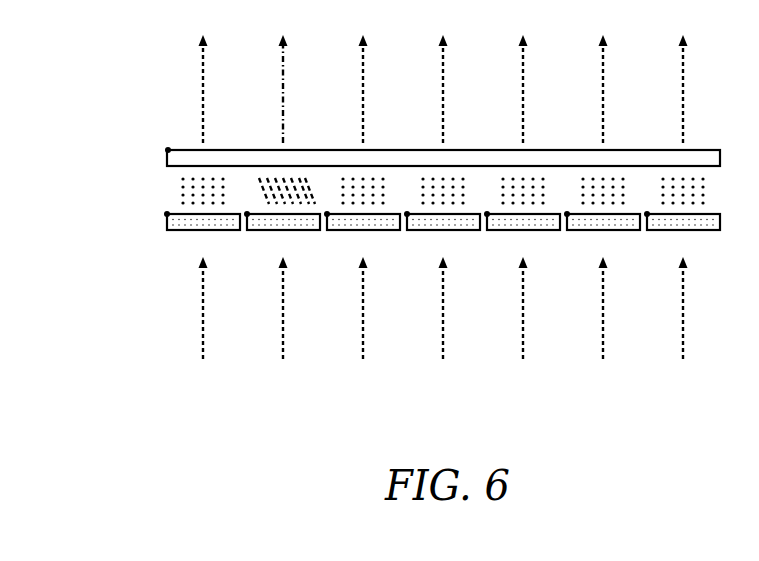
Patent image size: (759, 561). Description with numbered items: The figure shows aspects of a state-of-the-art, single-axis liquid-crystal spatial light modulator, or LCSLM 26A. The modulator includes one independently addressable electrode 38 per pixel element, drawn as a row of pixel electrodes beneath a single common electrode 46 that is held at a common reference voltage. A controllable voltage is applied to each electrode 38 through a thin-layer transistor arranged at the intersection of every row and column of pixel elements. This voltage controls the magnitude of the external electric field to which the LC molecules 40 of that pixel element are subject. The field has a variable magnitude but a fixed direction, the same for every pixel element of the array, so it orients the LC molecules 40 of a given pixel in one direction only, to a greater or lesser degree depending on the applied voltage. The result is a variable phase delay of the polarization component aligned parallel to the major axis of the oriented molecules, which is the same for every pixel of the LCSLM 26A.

The single-axis LCSLM 26A is at (422, 197).
The common electrode 46 is at (551, 149).
The LC molecules 40 is at (320, 184).
The independently addressable electrode 38 is at (296, 231).